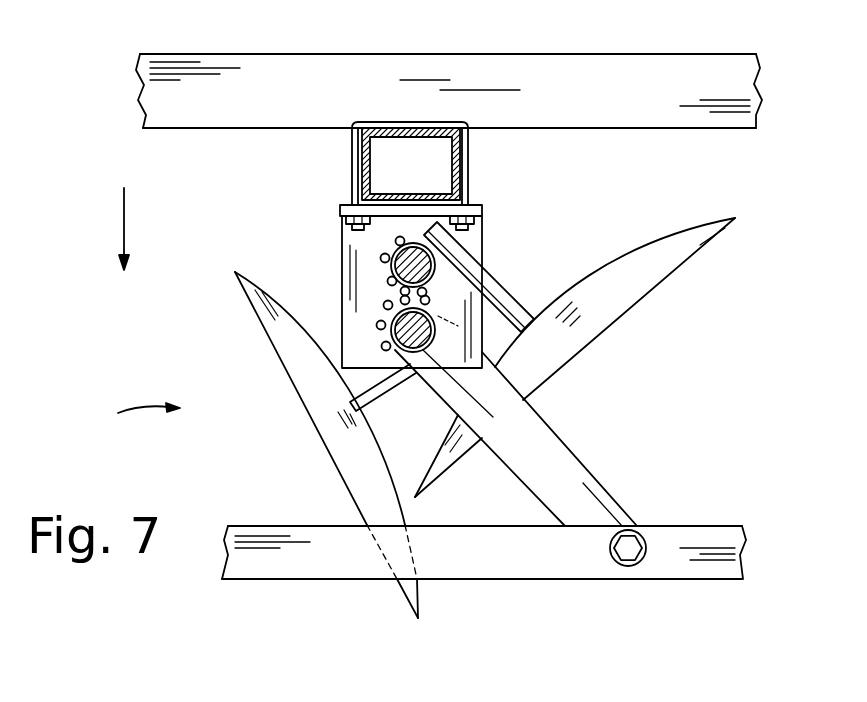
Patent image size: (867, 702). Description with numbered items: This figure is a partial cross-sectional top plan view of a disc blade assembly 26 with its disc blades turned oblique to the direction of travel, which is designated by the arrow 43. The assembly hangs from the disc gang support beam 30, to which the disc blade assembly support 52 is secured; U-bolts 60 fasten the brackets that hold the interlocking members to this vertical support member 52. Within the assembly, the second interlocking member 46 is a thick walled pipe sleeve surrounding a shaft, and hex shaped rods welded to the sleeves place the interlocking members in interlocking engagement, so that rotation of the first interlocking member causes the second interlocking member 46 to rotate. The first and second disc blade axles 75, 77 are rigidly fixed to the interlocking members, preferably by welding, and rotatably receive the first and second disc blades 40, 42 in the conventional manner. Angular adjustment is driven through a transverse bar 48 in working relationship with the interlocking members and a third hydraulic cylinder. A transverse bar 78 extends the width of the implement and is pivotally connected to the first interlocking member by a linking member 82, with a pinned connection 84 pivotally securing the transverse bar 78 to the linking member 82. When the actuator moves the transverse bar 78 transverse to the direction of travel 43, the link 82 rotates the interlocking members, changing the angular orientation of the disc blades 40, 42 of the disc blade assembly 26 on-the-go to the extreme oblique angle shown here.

The disc blade assembly 26 is at (126, 415).
The disc gang support beam 30 is at (606, 62).
The first disc blade 40 is at (318, 407).
The second disc blade 42 is at (652, 280).
The arrow 43 is at (93, 229).
The second interlocking member 46 is at (389, 252).
The transverse bar 48 is at (391, 343).
The disc blade assembly support 52 is at (462, 165).
The U-bolt 60 is at (410, 127).
The first disc blade axle 75 is at (392, 390).
The second disc blade axle 77 is at (485, 282).
The transverse bar 78 is at (305, 563).
The linking member 82 is at (548, 463).
The pinned connection 84 is at (627, 552).